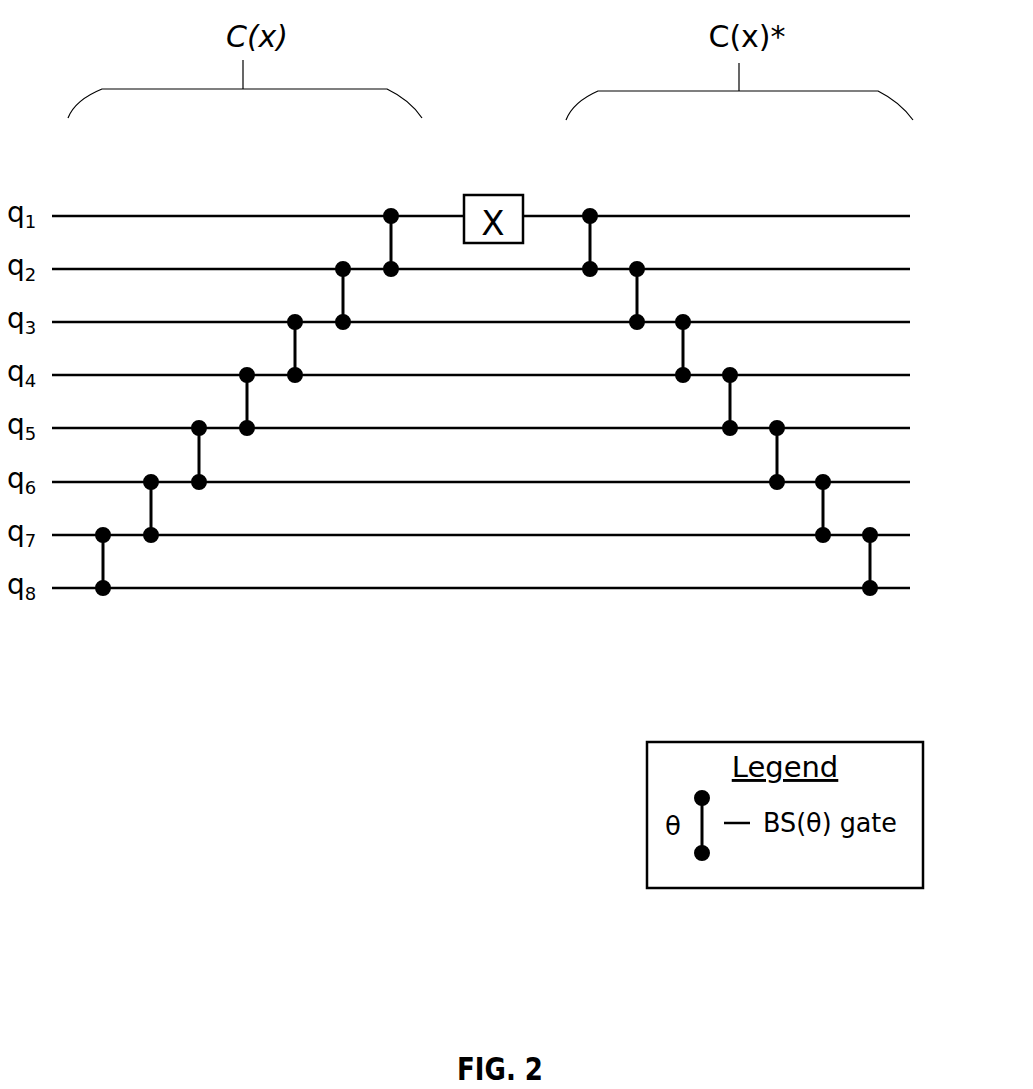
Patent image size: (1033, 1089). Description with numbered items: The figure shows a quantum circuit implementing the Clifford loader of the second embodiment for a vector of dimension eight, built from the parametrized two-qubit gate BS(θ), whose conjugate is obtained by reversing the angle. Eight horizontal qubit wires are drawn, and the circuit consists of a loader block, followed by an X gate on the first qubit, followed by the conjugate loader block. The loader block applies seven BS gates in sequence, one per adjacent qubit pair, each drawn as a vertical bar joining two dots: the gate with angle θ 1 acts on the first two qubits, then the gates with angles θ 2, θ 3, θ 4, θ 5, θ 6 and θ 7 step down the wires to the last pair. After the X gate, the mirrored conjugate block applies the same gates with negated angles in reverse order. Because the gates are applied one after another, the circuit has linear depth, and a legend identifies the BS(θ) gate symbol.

The BS gate with angle θ 1 is at (477, 243).
The BS gate with angle θ 2 is at (477, 296).
The BS gate with angle θ 3 is at (476, 349).
The BS gate with angle θ 4 is at (475, 402).
The BS gate with angle θ 5 is at (475, 455).
The BS gate with angle θ 6 is at (474, 509).
The BS gate with angle θ 7 is at (473, 562).